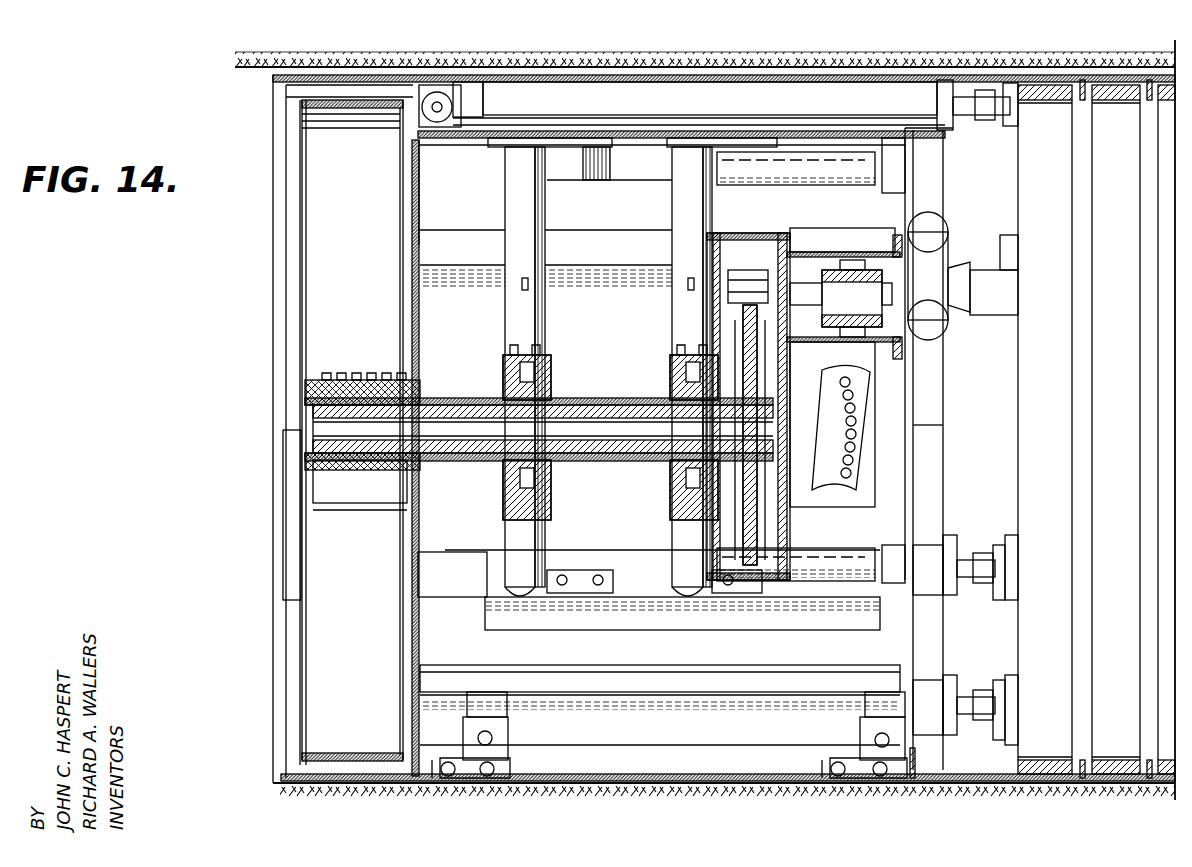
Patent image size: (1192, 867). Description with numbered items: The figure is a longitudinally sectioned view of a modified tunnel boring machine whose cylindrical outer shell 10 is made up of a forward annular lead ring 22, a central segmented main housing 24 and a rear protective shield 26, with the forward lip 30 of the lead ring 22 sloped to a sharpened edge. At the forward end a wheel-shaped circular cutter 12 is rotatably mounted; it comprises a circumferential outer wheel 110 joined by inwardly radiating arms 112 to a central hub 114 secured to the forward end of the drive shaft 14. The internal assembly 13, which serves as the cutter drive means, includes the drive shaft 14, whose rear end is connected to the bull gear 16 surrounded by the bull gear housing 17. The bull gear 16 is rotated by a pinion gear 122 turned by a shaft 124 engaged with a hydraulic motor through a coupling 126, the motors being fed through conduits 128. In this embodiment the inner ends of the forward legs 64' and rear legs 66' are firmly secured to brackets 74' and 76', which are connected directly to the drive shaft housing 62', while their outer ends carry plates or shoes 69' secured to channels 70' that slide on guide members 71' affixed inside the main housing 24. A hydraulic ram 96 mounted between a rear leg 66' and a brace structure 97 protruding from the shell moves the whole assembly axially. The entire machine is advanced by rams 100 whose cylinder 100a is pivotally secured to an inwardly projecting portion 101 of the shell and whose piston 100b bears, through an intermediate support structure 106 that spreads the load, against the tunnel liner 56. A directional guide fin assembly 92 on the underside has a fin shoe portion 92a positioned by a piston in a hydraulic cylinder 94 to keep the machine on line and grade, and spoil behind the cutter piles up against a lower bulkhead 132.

The cylindrical outer shell 10 is at (682, 70).
The circular cutter 12 is at (266, 287).
The internal assembly 13 is at (600, 385).
The drive shaft 14 is at (456, 455).
The bull gear 16 is at (748, 330).
The bull gear housing 17 is at (772, 590).
The lead ring 22 is at (358, 75).
The main housing 24 is at (588, 70).
The protective shield 26 is at (1052, 78).
The forward lip 30 is at (276, 78).
The tunnel liner 56 is at (1048, 100).
The drive shaft housing 62' is at (576, 373).
The forward legs 64' is at (493, 371).
The rear legs 66' is at (566, 371).
The plates or shoes 69' is at (605, 398).
The channels 70' is at (682, 403).
The guide members 71' is at (630, 396).
The brackets 74' is at (497, 372).
The brackets 76' is at (610, 432).
The directional guide fin assembly 92 is at (445, 745).
The fin shoe portion 92a is at (475, 790).
The hydraulic cylinder 94 is at (490, 695).
The hydraulic ram 96 is at (803, 176).
The brace structure 97 is at (897, 170).
The rams 100 is at (755, 93).
The cylinder 100a is at (470, 92).
The piston 100b is at (965, 98).
The inwardly projecting portion 101 is at (428, 93).
The intermediate support structure 106 is at (1010, 88).
The circumferential outer wheel 110 is at (352, 757).
The inwardly radiating arms 112 is at (258, 550).
The central hub 114 is at (306, 390).
The pinion gear 122 is at (735, 270).
The shaft 124 is at (773, 285).
The coupling 126 is at (833, 270).
The conduits 128 is at (998, 318).
The lower bulkhead 132 is at (413, 657).